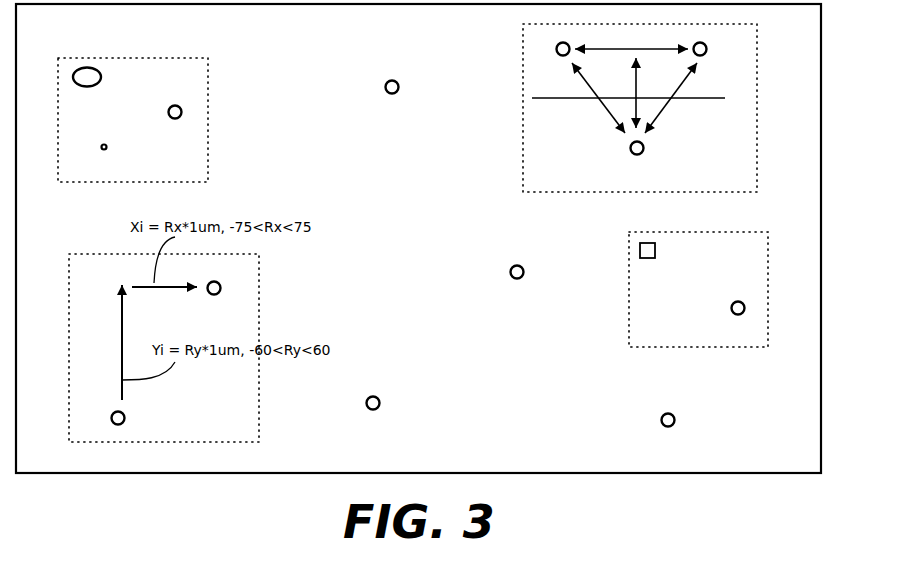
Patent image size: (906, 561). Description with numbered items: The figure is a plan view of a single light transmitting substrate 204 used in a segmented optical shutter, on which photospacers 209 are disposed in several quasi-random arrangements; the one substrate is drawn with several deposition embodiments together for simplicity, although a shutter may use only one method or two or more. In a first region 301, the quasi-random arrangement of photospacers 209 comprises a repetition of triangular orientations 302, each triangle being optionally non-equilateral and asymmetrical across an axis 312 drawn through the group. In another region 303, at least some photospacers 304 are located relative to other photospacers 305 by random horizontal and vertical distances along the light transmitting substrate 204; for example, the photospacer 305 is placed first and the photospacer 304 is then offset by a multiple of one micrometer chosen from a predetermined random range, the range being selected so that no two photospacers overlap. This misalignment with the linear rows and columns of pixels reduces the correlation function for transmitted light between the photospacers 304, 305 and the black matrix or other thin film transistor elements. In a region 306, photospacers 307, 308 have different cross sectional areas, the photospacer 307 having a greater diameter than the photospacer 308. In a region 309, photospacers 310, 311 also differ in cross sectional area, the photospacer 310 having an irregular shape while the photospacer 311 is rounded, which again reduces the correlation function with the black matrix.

The light transmitting substrate 204 is at (821, 243).
The photospacers 209 is at (520, 263).
The first region 301 is at (525, 128).
The triangular orientations 302 is at (618, 125).
The region 303 is at (259, 397).
The photospacer 304 is at (222, 288).
The photospacer 305 is at (127, 418).
The region 306 is at (208, 128).
The photospacer 307 is at (88, 66).
The photospacer 308 is at (106, 149).
The region 309 is at (629, 317).
The photospacer 310 is at (656, 250).
The photospacer 311 is at (730, 306).
The axis 312 is at (532, 98).